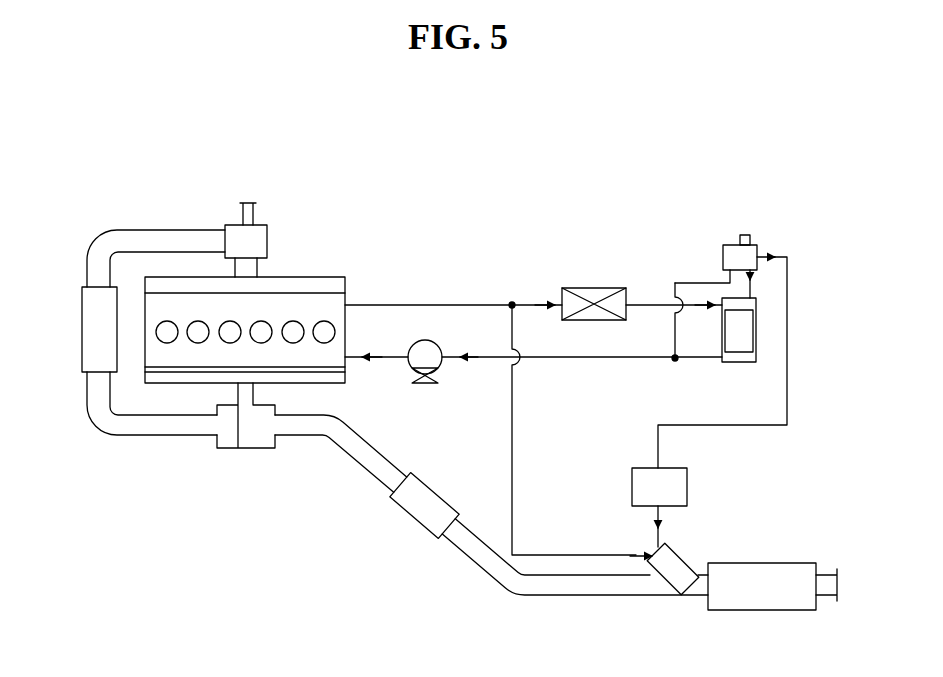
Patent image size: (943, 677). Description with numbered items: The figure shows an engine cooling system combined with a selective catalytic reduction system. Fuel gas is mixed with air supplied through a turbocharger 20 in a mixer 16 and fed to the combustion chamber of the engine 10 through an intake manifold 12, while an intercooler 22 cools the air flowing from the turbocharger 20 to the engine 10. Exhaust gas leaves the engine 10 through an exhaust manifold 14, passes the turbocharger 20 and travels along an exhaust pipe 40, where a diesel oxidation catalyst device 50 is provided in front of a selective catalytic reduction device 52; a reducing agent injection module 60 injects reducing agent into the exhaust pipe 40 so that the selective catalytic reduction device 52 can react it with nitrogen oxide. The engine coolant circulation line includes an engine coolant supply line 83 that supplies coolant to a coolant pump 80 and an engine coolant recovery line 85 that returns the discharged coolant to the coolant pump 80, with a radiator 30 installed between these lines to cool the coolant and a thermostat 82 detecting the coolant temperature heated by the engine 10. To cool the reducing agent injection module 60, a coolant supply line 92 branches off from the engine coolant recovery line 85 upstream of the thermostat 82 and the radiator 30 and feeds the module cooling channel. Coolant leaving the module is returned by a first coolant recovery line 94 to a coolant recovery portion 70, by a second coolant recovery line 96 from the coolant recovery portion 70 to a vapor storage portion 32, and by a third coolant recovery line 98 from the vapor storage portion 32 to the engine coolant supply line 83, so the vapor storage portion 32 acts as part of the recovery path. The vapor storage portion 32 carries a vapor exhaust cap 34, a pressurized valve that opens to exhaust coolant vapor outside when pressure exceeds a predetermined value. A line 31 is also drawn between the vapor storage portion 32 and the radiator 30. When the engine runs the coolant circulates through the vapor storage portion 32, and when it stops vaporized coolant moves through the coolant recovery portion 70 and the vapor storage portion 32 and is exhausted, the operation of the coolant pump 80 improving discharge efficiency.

The engine 10 is at (359, 266).
The intake manifold 12 is at (305, 291).
The exhaust manifold 14 is at (342, 372).
The mixer 16 is at (262, 228).
The turbocharger 20 is at (246, 450).
The intercooler 22 is at (95, 332).
The radiator 30 is at (747, 331).
The reservoir line 31 is at (755, 287).
The vapor storage portion 32 is at (722, 258).
The vapor exhaust cap 34 is at (745, 234).
The exhaust pipe 40 is at (573, 590).
The diesel oxidation catalyst device 50 is at (420, 508).
The selective catalytic reduction device 52 is at (762, 594).
The reducing agent injection module 60 is at (677, 576).
The coolant recovery portion 70 is at (682, 488).
The coolant pump 80 is at (425, 384).
The thermostat 82 is at (592, 287).
The engine coolant supply line 83 is at (488, 360).
The engine coolant recovery line 85 is at (468, 304).
The coolant supply line 92 is at (517, 390).
The first coolant recovery line 94 is at (665, 530).
The second coolant recovery line 96 is at (789, 357).
The third coolant recovery line 98 is at (673, 341).